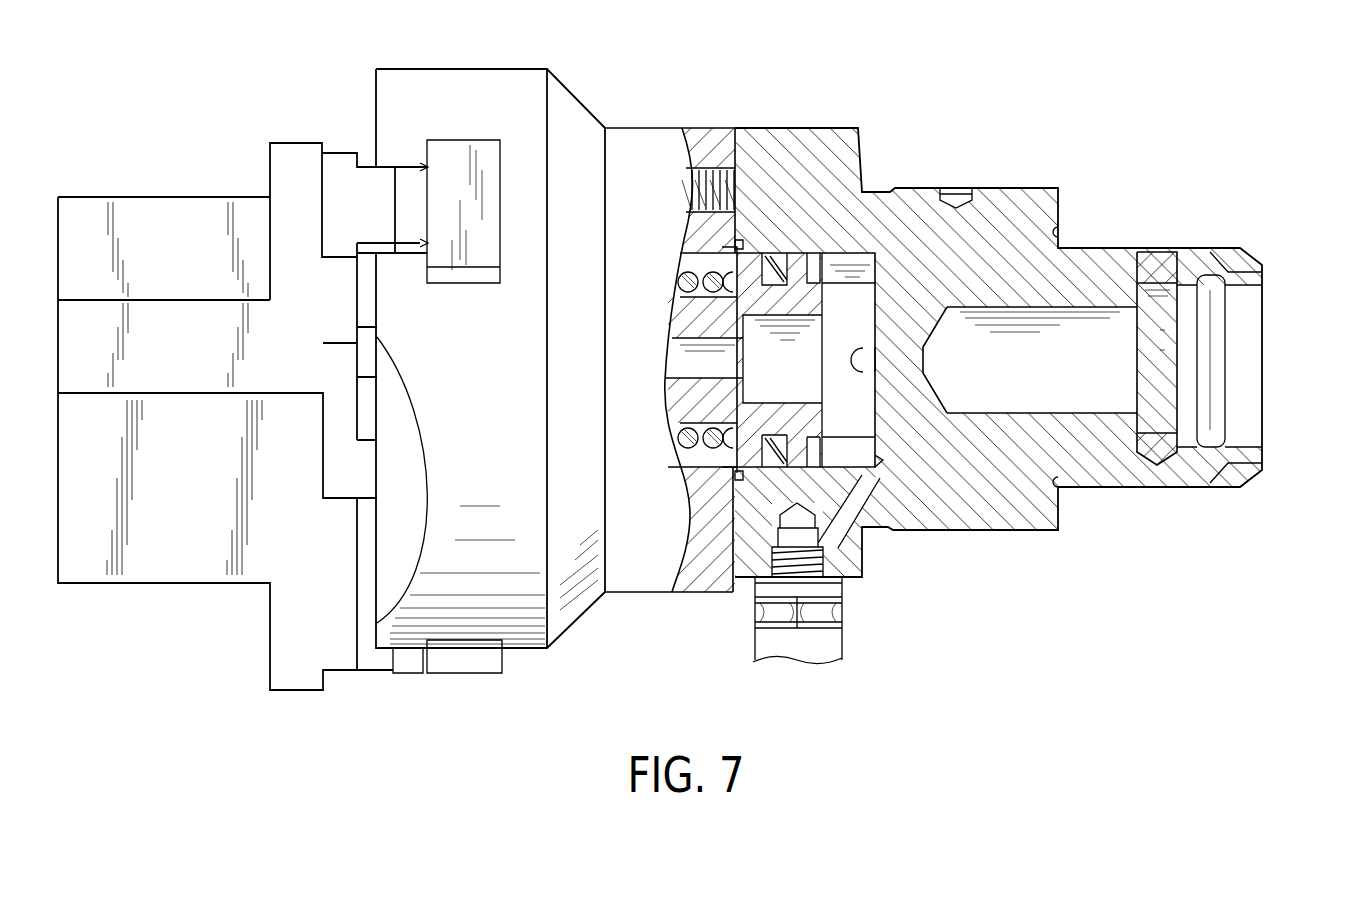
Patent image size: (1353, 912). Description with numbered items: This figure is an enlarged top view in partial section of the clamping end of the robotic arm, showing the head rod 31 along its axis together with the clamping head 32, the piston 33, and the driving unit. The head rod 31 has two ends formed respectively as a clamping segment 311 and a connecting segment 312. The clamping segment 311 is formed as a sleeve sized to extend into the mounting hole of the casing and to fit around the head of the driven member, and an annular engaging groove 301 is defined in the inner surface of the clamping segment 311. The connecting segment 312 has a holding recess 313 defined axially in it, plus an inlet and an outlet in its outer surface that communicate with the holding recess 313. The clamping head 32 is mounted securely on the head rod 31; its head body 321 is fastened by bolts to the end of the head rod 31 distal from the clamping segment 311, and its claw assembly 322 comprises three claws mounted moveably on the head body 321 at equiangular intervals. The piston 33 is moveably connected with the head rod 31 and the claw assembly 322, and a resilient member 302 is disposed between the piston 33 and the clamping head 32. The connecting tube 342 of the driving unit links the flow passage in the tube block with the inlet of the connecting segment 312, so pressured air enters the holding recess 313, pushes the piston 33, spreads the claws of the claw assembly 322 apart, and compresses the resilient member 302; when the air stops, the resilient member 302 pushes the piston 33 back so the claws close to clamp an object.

The head rod 31 is at (1027, 130).
The clamping head 32 is at (314, 90).
The piston 33 is at (802, 413).
The annular engaging groove 301 is at (1212, 443).
The resilient member 302 is at (677, 437).
The clamping segment 311 is at (1183, 473).
The connecting segment 312 is at (787, 140).
The holding recess 313 is at (840, 253).
The head body 321 is at (638, 148).
The claw assembly 322 is at (148, 154).
The connecting tube 342 is at (828, 613).